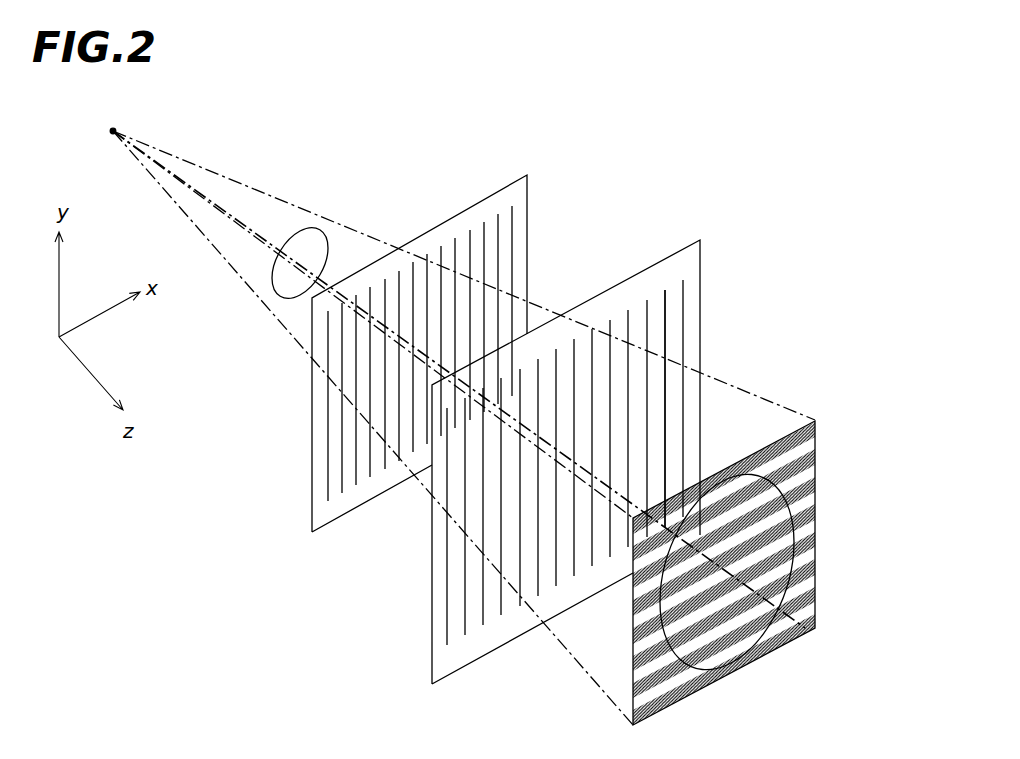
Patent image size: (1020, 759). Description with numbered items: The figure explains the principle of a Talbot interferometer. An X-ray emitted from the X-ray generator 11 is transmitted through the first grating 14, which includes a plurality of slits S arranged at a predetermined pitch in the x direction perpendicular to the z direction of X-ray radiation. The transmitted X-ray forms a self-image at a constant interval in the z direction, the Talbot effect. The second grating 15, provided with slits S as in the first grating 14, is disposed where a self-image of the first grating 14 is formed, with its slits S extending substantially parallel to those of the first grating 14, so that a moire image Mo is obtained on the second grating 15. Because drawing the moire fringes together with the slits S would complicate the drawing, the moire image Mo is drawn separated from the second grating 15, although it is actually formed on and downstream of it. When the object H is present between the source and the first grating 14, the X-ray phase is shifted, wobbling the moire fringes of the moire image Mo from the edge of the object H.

The X-ray generator 11 is at (118, 127).
The first grating 14 is at (463, 211).
The second grating 15 is at (653, 262).
The object H is at (322, 226).
The slits S is at (665, 332).
The moire image Mo is at (815, 479).